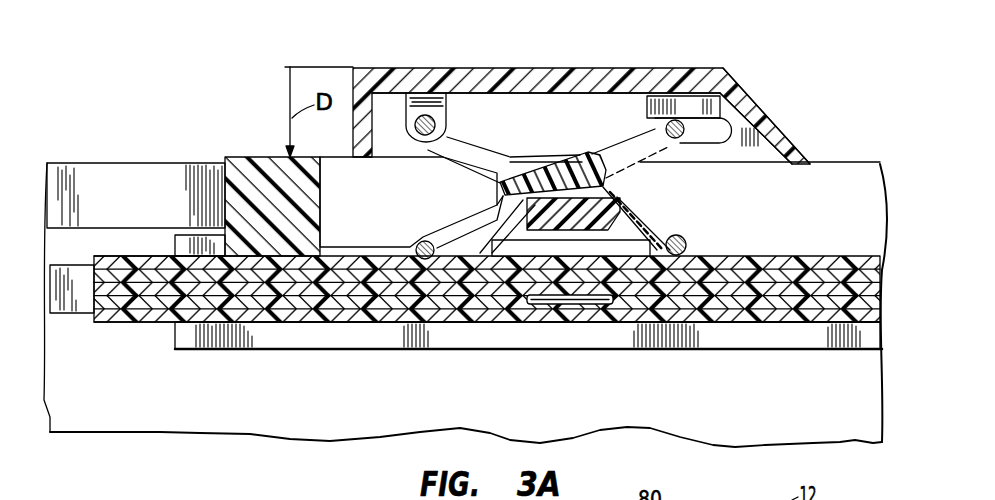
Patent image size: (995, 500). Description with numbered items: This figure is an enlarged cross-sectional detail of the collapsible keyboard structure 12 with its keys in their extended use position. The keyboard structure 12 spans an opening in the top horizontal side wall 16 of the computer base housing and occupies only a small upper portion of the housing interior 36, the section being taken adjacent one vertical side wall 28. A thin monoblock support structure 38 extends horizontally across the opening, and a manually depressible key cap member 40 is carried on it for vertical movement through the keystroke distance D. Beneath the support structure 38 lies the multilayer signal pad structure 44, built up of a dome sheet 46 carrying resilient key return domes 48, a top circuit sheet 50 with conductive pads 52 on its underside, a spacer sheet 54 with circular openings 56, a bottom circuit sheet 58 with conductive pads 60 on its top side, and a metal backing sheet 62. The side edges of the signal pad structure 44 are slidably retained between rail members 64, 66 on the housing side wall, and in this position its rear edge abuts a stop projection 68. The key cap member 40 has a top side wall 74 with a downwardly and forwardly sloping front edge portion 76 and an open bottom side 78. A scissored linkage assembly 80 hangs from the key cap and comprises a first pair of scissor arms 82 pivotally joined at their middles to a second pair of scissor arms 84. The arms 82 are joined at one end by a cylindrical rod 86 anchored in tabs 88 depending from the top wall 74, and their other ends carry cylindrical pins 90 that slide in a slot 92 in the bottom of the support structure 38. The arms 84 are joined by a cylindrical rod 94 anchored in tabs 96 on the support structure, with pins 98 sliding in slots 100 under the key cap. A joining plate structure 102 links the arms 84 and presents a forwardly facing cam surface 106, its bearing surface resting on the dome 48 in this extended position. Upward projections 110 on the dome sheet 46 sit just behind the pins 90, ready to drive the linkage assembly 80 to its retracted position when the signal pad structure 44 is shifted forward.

The collapsible keyboard structure 12 is at (808, 105).
The top horizontal side wall 16 is at (134, 162).
The vertical side wall 28 is at (695, 421).
The interior 36 is at (222, 400).
The monoblock support structure 38 is at (235, 156).
The key cap member 40 is at (605, 60).
The signal pad structure 44 is at (115, 245).
The dome sheet 46 is at (843, 266).
The key return dome 48 is at (645, 232).
The top circuit sheet 50 is at (833, 280).
The electrically conductive pad 52 is at (515, 310).
The spacer sheet 54 is at (764, 295).
The circular opening 56 is at (622, 330).
The bottom circuit sheet 58 is at (860, 320).
The electrically conductive pad 60 is at (555, 304).
The metal backing sheet 62 is at (797, 330).
The rail member 64 is at (174, 238).
The rail member 66 is at (174, 337).
The stop projection 68 is at (68, 312).
The top side wall 74 is at (486, 68).
The front edge portion 76 is at (755, 103).
The open bottom side 78 is at (395, 160).
The scissored linkage assembly 80 is at (536, 115).
The first pair of scissor arms 82 is at (468, 148).
The second pair of scissor arms 84 is at (457, 226).
The cylindrical rod 86 is at (420, 95).
The tab 88 is at (447, 95).
The cylindrical pin 90 is at (678, 248).
The slot 92 is at (730, 257).
The cylindrical rod 94 is at (427, 345).
The tab 96 is at (420, 242).
The cylindrical pin 98 is at (676, 120).
The slot 100 is at (718, 148).
The joining plate structure 102 is at (598, 128).
The cam surface 106 is at (605, 175).
The upward projection 110 is at (627, 355).